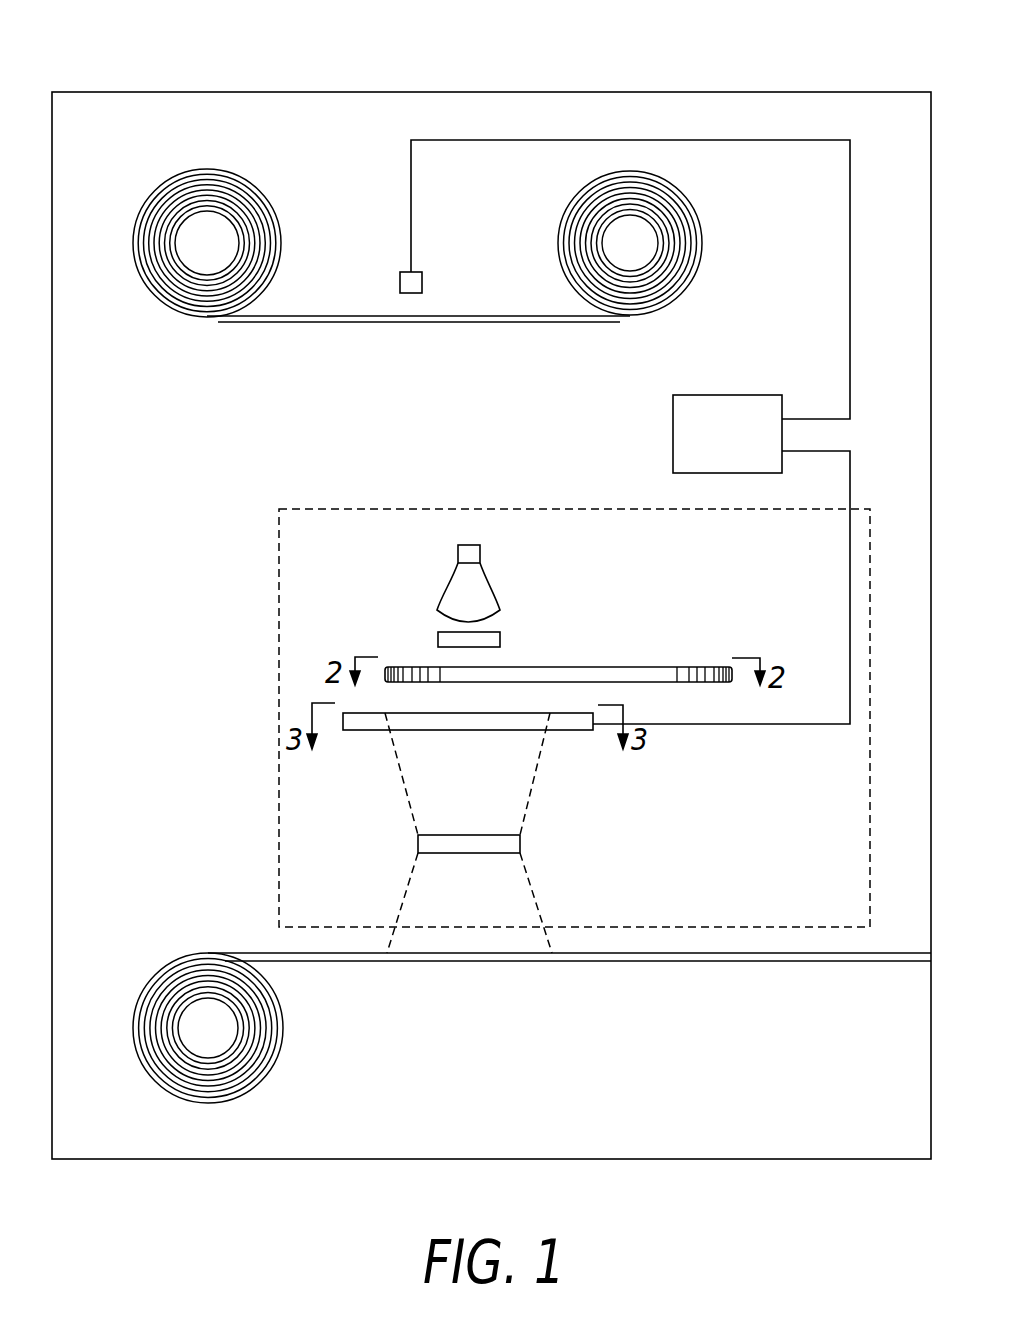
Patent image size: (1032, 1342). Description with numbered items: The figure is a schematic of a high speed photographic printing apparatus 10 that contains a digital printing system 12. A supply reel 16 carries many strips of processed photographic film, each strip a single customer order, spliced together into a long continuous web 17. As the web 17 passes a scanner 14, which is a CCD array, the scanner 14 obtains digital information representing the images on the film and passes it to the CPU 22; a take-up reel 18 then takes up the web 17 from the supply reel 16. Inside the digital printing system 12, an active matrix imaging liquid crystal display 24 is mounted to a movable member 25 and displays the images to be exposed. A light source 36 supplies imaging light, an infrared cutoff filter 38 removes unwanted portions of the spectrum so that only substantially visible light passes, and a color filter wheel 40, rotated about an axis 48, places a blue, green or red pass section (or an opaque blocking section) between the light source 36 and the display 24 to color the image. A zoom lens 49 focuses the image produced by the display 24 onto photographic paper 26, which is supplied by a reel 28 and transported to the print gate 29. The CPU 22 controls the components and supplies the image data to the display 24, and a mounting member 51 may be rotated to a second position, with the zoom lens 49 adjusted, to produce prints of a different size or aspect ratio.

The high speed photographic printing apparatus 10 is at (740, 65).
The digital printing system 12 is at (377, 498).
The scanner 14 is at (422, 273).
The supply reel 16 is at (249, 182).
The web 17 is at (290, 313).
The take-up reel 18 is at (702, 243).
The CPU 22 is at (740, 395).
The active matrix imaging liquid crystal display 24 is at (490, 713).
The movable member 25 is at (360, 731).
The photographic paper 26 is at (263, 951).
The reel 28 is at (277, 1055).
The print gate 29 is at (552, 955).
The light source 36 is at (490, 580).
The infrared cutoff filter 38 is at (438, 632).
The color filter wheel 40 is at (658, 667).
The axis 48 is at (557, 667).
The zoom lens 49 is at (418, 837).
The mounting member 51 is at (573, 731).